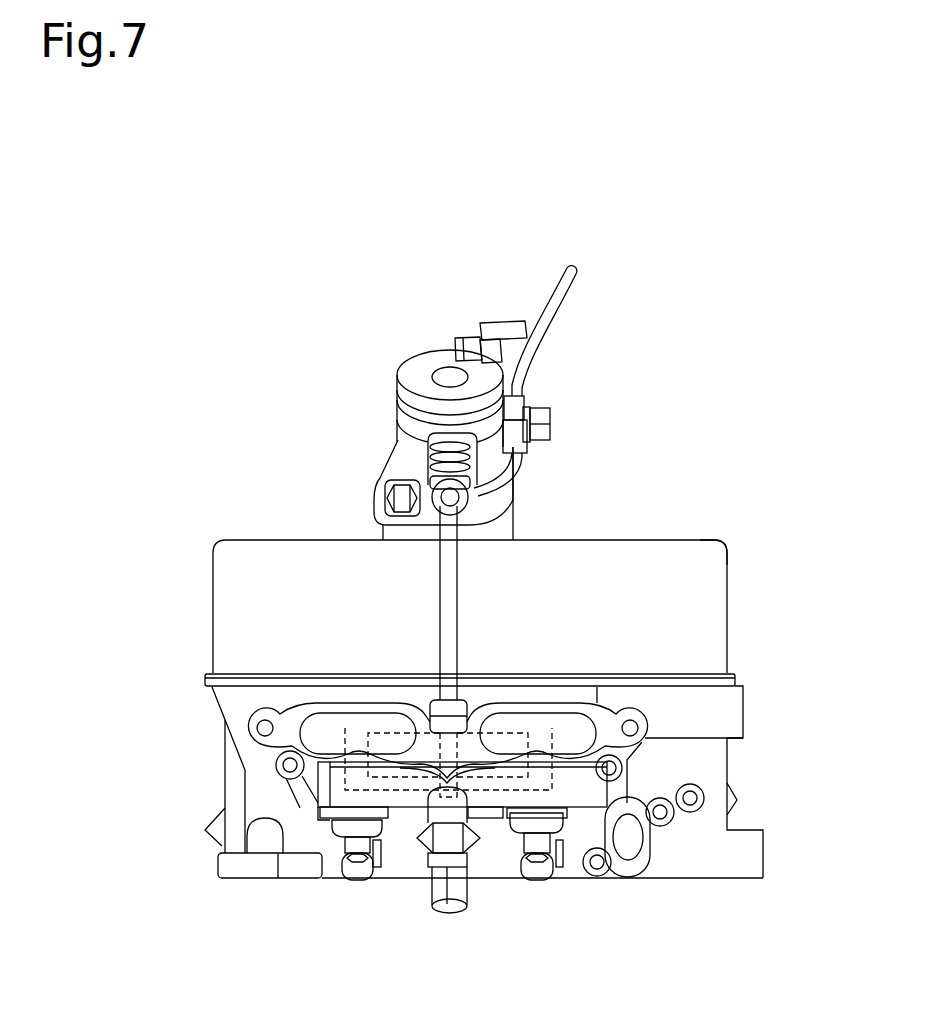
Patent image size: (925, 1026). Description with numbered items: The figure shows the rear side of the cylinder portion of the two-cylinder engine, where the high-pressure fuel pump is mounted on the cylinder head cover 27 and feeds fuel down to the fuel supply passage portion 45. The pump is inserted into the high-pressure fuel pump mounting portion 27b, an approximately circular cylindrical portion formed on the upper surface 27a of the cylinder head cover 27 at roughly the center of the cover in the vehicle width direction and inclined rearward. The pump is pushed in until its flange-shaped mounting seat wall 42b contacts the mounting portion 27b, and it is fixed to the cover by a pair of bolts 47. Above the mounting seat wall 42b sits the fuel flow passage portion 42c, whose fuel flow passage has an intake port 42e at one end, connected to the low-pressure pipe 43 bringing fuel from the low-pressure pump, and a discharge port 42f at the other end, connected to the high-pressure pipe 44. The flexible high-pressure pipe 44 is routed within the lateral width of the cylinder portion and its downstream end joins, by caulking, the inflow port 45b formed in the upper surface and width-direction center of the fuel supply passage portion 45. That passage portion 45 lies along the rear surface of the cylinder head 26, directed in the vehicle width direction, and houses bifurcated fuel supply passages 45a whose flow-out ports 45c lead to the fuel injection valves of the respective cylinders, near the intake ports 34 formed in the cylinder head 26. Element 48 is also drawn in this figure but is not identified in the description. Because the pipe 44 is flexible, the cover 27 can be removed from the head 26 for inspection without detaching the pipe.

The low-pressure pipe 43 is at (550, 310).
The intake port 42e is at (517, 433).
The fuel flow passage portion 42c is at (403, 433).
The mounting seat wall 42b is at (390, 470).
The bolts 47 is at (385, 497).
The discharge port 42f is at (470, 462).
The high-pressure fuel pump mounting portion 27b is at (503, 527).
The upper surface 27a is at (680, 538).
The cylinder head cover 27 is at (707, 603).
The high-pressure pipe 44 is at (447, 597).
The flow-out ports 45c is at (540, 727).
The inflow port 45b is at (430, 705).
The cylinder head 26 is at (718, 765).
The intake port 34 is at (327, 740).
The fuel supply passages 45a is at (387, 793).
The sensor 48 is at (433, 853).
The fuel supply passage portion 45 is at (487, 800).